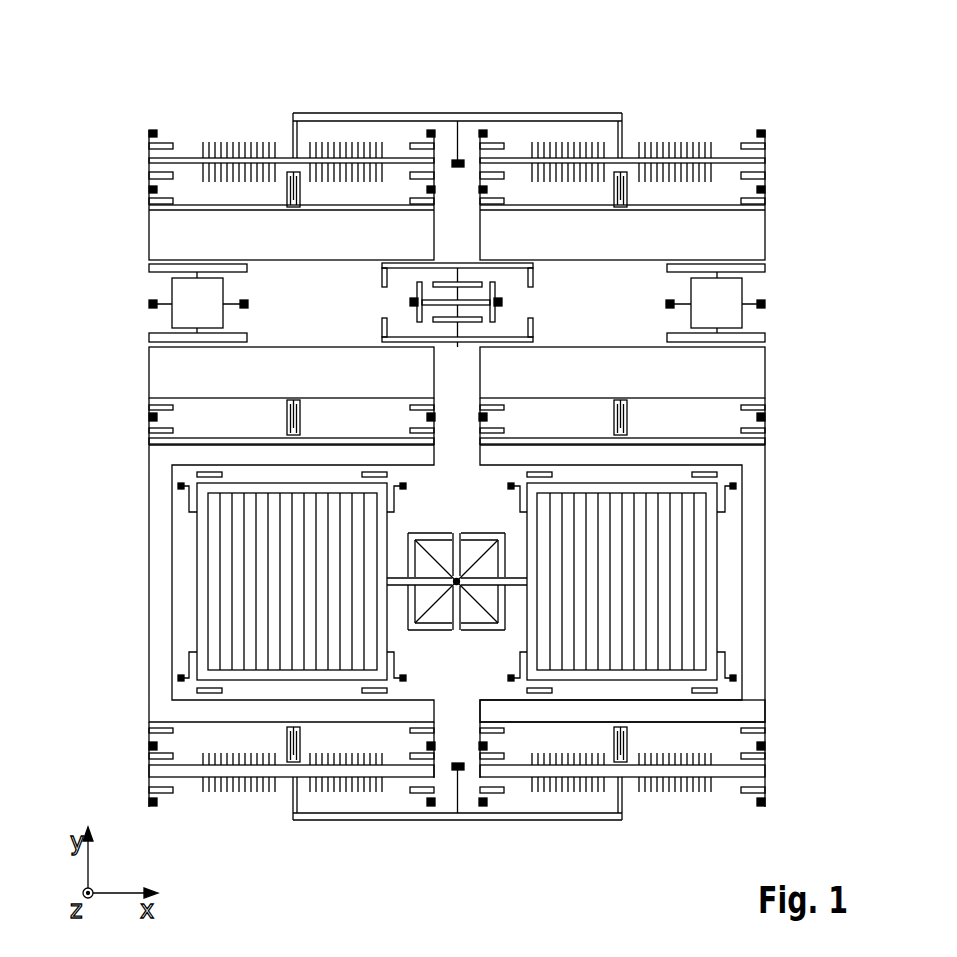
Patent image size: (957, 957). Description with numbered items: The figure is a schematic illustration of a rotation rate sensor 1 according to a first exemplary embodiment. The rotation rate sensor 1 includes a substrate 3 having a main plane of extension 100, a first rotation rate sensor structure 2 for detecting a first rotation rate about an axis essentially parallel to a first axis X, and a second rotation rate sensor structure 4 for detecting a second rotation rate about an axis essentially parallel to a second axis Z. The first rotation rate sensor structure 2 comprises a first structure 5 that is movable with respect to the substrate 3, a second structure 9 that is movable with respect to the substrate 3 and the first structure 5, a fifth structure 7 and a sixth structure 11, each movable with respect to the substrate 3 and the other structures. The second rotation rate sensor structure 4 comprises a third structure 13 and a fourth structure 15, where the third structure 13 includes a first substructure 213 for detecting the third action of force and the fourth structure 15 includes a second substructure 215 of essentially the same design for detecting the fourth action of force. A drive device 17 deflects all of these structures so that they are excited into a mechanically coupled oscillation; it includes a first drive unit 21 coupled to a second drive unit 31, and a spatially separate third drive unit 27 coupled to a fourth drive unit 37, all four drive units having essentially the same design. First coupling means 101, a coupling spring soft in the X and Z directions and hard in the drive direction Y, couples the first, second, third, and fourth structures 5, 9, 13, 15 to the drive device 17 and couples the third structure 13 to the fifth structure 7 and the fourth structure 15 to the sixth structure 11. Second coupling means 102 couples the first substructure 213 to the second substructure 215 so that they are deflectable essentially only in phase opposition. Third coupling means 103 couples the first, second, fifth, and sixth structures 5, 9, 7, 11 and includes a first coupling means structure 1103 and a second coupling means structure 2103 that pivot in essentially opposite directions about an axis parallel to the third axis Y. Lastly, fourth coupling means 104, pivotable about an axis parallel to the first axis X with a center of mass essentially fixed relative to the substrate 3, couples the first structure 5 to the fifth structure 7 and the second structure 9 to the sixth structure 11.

The rotation rate sensor 1 is at (778, 78).
The main plane of extension 100 is at (842, 786).
The first rotation rate sensor structure 2 is at (794, 208).
The substrate 3 is at (622, 764).
The second rotation rate sensor structure 4 is at (779, 690).
The first structure 5 is at (136, 236).
The fifth structure 7 is at (136, 373).
The second structure 9 is at (779, 236).
The sixth structure 11 is at (779, 370).
The third structure 13 is at (136, 665).
The fourth structure 15 is at (779, 660).
The drive device 17 is at (270, 106).
The first drive unit 21 is at (285, 106).
The third drive unit 27 is at (283, 827).
The second drive unit 31 is at (630, 106).
The fourth drive unit 37 is at (628, 824).
The first coupling means 101 is at (275, 195).
The second coupling means 102 is at (458, 644).
The third coupling means 103 is at (369, 292).
The fourth coupling means 104 is at (260, 304).
The first substructure 213 is at (197, 618).
The second substructure 215 is at (717, 618).
The first coupling means structure 1103 is at (458, 246).
The second coupling means structure 2103 is at (458, 360).